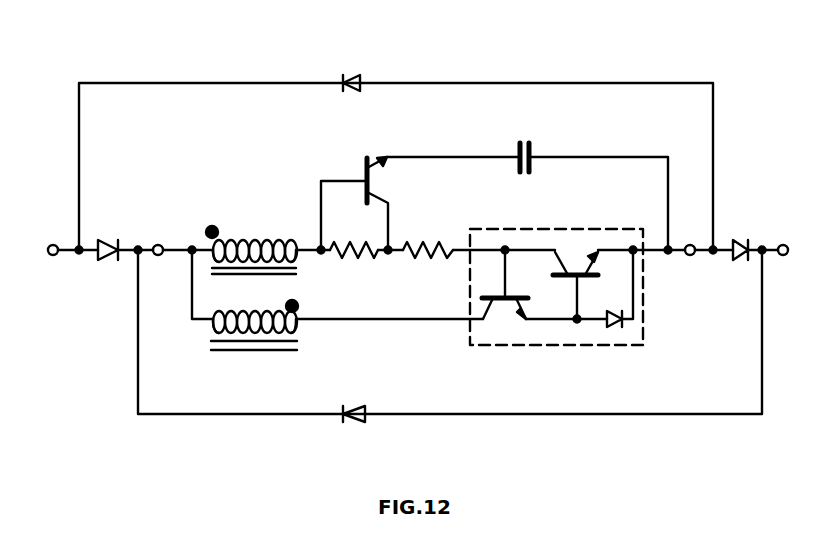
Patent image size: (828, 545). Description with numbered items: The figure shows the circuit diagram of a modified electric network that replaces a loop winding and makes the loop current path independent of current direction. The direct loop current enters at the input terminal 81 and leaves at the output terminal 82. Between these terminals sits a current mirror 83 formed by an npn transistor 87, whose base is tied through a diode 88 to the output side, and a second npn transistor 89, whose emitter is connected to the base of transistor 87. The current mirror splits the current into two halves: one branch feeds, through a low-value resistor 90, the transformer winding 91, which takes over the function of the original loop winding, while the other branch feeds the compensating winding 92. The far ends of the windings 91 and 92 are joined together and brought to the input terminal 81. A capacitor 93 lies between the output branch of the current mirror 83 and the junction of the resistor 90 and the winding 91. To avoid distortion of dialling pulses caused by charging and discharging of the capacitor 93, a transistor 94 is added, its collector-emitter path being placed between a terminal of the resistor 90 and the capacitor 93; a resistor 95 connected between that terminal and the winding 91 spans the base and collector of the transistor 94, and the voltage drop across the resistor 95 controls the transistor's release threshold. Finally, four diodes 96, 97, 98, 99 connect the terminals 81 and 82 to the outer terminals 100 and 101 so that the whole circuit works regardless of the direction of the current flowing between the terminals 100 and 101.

The input terminal 81 is at (158, 245).
The output terminal 82 is at (690, 245).
The current mirror 83 is at (575, 229).
The npn transistor 87 is at (575, 273).
The diode 88 is at (615, 312).
The npn transistor 89 is at (503, 300).
The low-value resistor 90 is at (430, 262).
The transformer winding 91 is at (262, 240).
The compensating winding 92 is at (212, 328).
The capacitor 93 is at (518, 147).
The transistor 94 is at (372, 178).
The resistor 95 is at (362, 262).
The diode 96 is at (113, 240).
The diode 97 is at (350, 75).
The diode 98 is at (358, 405).
The diode 99 is at (740, 260).
The terminal 100 is at (53, 255).
The terminal 101 is at (783, 245).